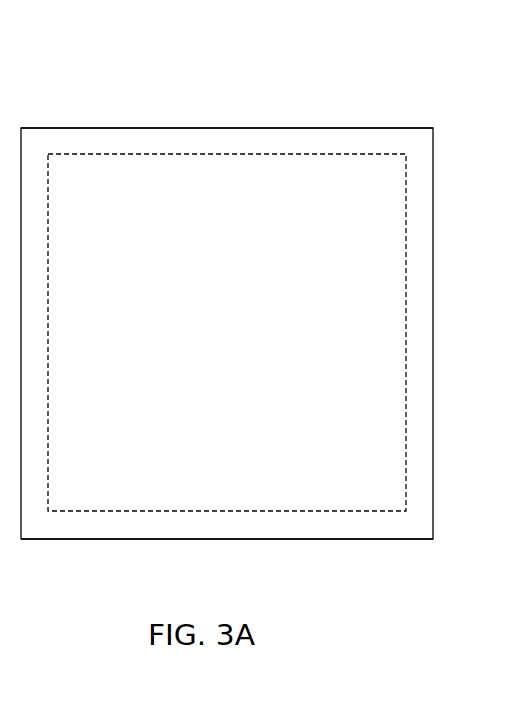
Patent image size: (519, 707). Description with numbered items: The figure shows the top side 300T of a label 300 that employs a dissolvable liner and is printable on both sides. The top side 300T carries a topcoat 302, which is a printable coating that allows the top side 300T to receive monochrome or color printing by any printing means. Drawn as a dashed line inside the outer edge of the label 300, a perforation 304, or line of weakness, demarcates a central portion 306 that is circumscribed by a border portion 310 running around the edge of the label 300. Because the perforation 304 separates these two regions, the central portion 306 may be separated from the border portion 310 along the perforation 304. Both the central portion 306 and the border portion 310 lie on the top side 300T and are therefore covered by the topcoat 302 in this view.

The label 300 is at (212, 107).
The top side 300T is at (273, 128).
The perforation 304 is at (384, 155).
The topcoat 302 is at (163, 230).
The central portion 306 is at (122, 443).
The border portion 310 is at (357, 532).